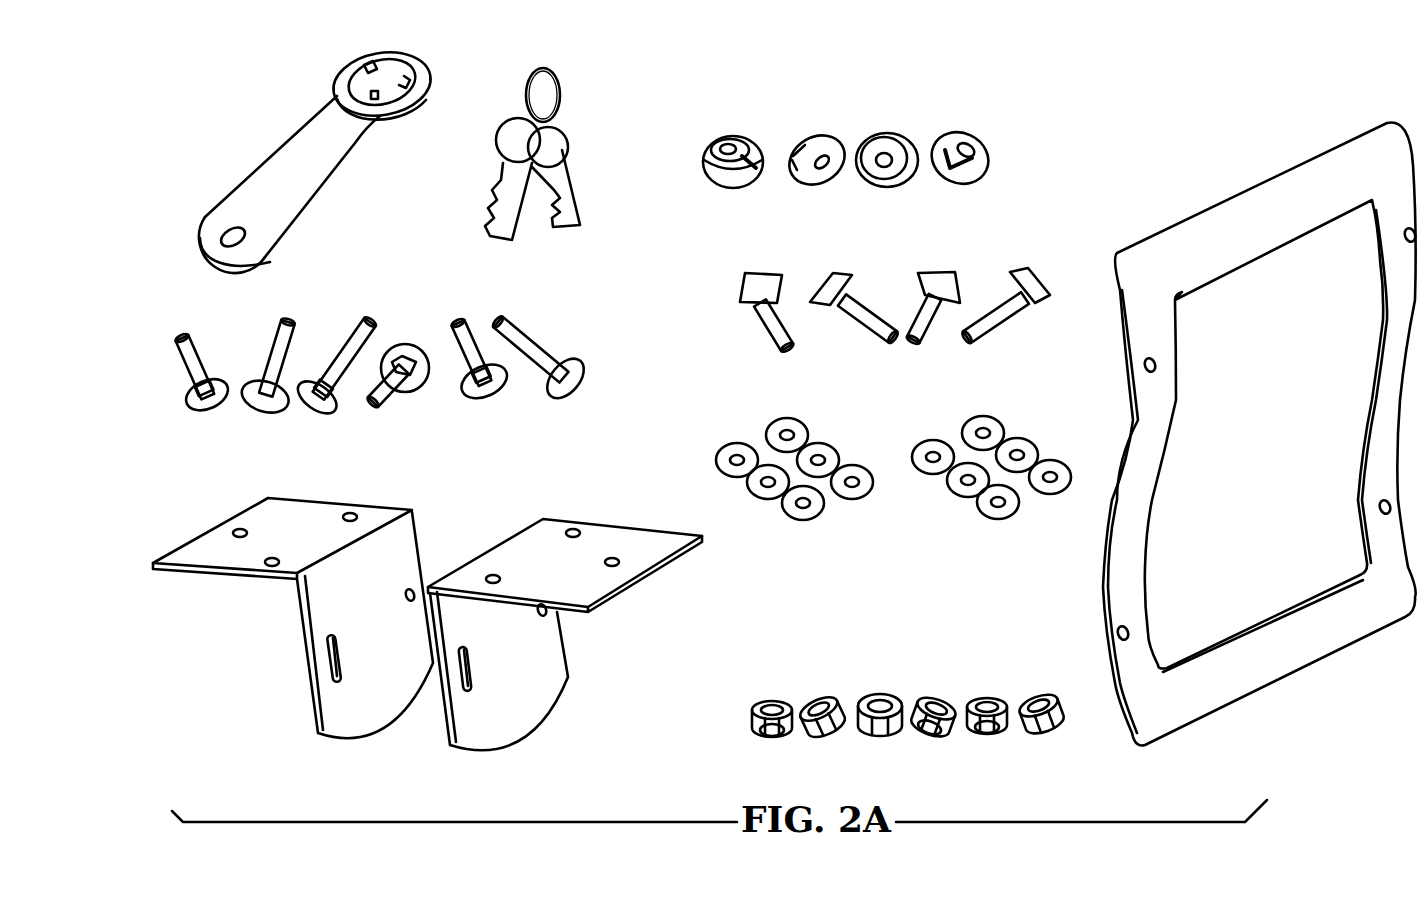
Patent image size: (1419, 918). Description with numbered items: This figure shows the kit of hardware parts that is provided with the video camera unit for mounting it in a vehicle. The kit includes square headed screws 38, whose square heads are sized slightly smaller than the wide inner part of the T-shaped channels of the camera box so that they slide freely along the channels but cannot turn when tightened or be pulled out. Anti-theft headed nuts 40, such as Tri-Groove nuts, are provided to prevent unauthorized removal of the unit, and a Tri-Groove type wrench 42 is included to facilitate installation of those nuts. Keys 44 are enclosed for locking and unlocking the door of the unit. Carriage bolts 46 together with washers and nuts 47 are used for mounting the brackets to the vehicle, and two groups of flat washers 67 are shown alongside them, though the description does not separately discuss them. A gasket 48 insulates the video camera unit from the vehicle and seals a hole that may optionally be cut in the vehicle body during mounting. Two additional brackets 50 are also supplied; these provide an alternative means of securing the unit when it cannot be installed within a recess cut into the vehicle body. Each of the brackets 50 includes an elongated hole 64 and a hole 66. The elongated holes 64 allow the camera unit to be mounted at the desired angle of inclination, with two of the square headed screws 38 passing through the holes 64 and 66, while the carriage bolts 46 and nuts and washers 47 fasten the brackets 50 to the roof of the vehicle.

The square headed screws 38 is at (740, 298).
The anti-theft headed nuts 40 is at (887, 160).
The Tri-Groove type wrench 42 is at (287, 148).
The keys 44 is at (567, 128).
The carriage bolts 46 is at (532, 350).
The washers and nuts 47 is at (752, 720).
The gasket 48 is at (1258, 182).
The additional brackets 50 is at (427, 622).
The elongated hole 64 is at (328, 675).
The hole 66 is at (407, 601).
The washers 67 is at (955, 485).